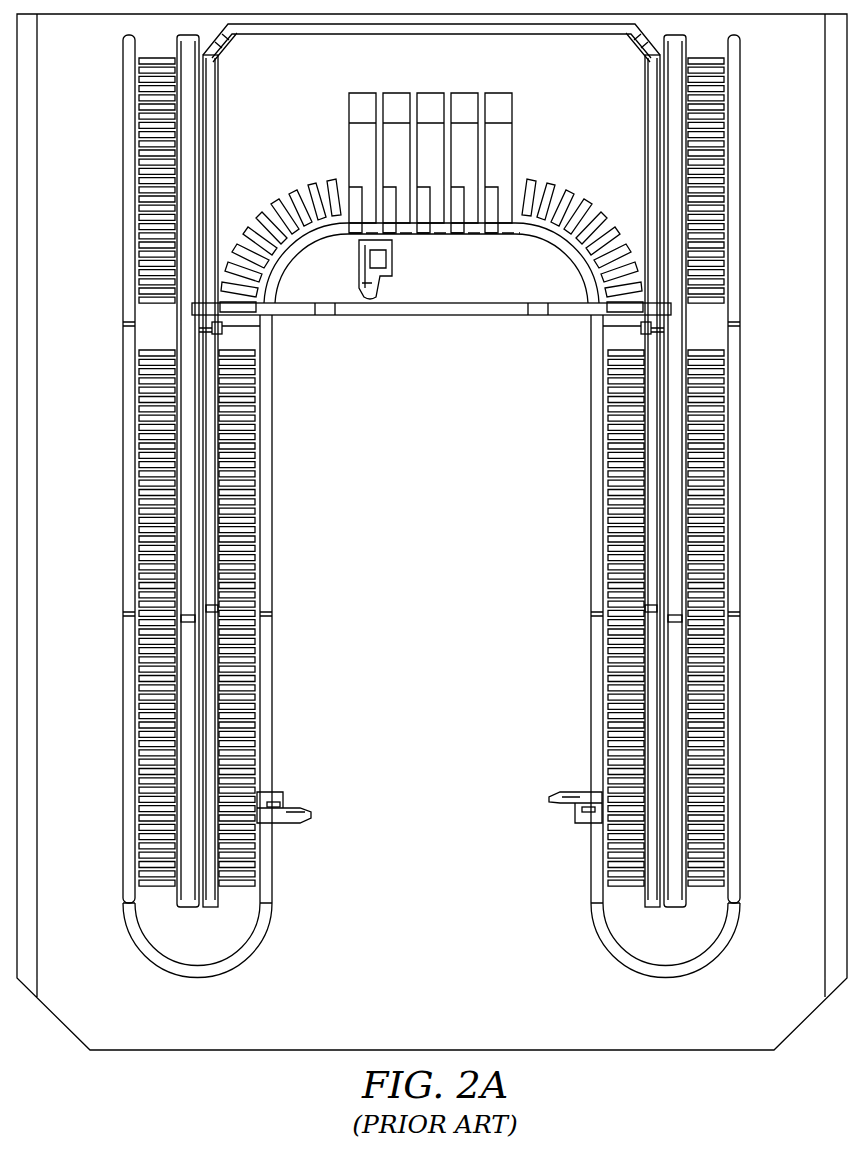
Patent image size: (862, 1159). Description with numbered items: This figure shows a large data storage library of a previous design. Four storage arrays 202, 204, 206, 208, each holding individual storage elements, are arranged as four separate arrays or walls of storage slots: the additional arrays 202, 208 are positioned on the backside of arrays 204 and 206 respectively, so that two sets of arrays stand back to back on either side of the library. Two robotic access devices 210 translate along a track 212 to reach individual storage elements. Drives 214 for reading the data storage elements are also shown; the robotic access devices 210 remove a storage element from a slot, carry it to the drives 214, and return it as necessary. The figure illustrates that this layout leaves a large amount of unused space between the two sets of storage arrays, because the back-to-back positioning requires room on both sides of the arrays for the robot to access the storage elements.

The storage array 202 is at (121, 471).
The storage array 204 is at (273, 471).
The storage array 206 is at (590, 471).
The storage array 208 is at (743, 471).
The robotic access device 210 is at (297, 826).
The track 212 is at (233, 972).
The drive 214 is at (517, 138).